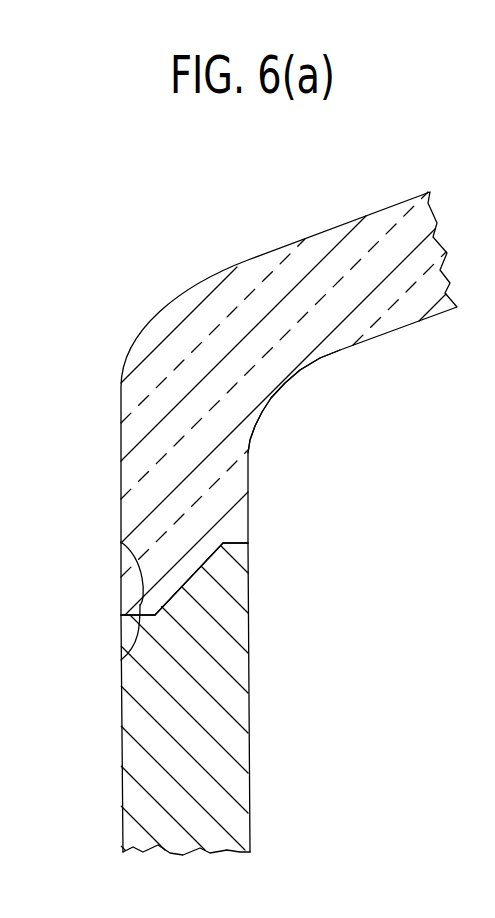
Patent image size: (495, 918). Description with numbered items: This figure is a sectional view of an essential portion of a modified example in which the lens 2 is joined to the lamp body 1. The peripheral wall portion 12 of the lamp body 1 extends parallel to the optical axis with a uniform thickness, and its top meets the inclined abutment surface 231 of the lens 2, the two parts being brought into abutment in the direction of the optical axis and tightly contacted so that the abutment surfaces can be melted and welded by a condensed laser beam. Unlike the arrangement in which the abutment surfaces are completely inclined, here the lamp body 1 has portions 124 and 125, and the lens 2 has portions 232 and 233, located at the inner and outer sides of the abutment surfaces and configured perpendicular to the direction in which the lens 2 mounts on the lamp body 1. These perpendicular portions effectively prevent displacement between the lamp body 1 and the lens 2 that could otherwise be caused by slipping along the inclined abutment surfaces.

The lamp body 1 is at (252, 823).
The lens 2 is at (226, 303).
The peripheral wall portion 12 is at (230, 752).
The portion perpendicular to the mounting direction 124 is at (247, 525).
The portion perpendicular to the mounting direction 125 is at (121, 542).
The abutment surface 231 is at (247, 452).
The portion perpendicular to the mounting direction 232 is at (249, 565).
The portion perpendicular to the mounting direction 233 is at (128, 657).